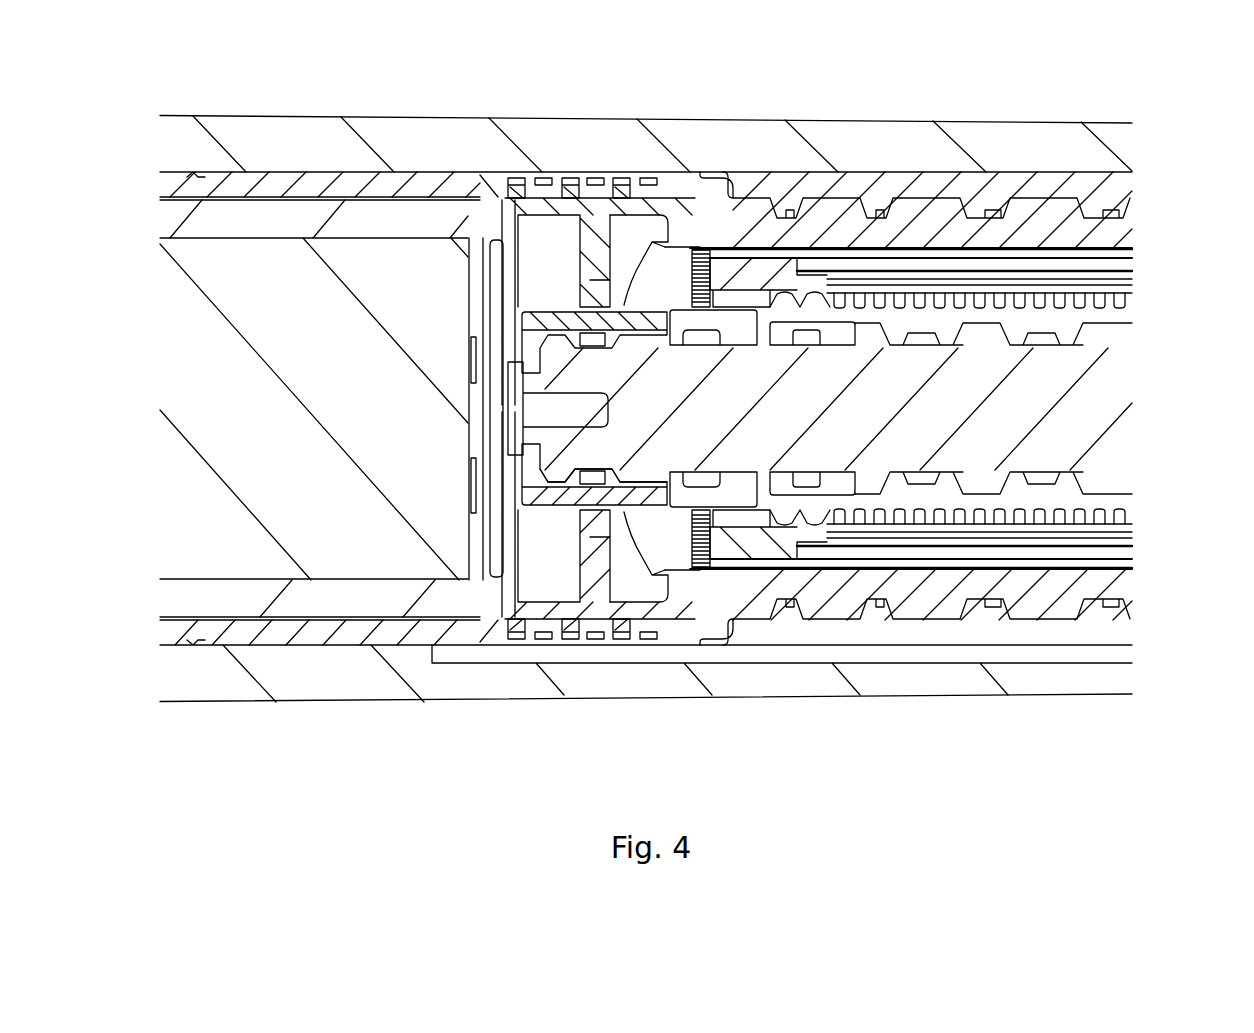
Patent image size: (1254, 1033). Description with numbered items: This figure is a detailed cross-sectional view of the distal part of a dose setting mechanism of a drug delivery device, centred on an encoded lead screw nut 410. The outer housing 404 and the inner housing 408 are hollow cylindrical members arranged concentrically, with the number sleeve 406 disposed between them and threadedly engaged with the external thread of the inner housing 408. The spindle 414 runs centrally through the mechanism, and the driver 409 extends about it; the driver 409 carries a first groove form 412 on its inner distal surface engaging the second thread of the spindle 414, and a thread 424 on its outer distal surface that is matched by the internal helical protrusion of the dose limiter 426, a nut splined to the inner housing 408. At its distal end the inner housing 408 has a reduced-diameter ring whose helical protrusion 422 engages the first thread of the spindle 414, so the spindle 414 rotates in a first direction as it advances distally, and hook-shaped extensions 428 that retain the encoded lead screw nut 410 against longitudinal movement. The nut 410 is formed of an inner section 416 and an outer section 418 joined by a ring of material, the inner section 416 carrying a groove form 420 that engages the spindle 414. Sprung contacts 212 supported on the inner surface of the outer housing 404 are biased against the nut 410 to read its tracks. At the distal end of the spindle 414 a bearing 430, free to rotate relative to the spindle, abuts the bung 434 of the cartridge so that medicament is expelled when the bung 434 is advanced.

The contacts 212 is at (623, 190).
The outer housing 404 is at (307, 159).
The number sleeve 406 is at (1082, 627).
The inner housing 408 is at (730, 227).
The driver 409 is at (1097, 503).
The encoded lead screw nut 410 is at (597, 577).
The first groove form 412 is at (833, 337).
The spindle 414 is at (992, 423).
The inner section 416 is at (542, 317).
The outer section 418 is at (592, 213).
The groove form 420 is at (620, 480).
The helical protrusion 422 is at (707, 530).
The thread 424 is at (973, 310).
The dose limiter 426 is at (767, 538).
The extensions 428 is at (622, 530).
The bearing 430 is at (505, 538).
The bung 434 is at (265, 431).